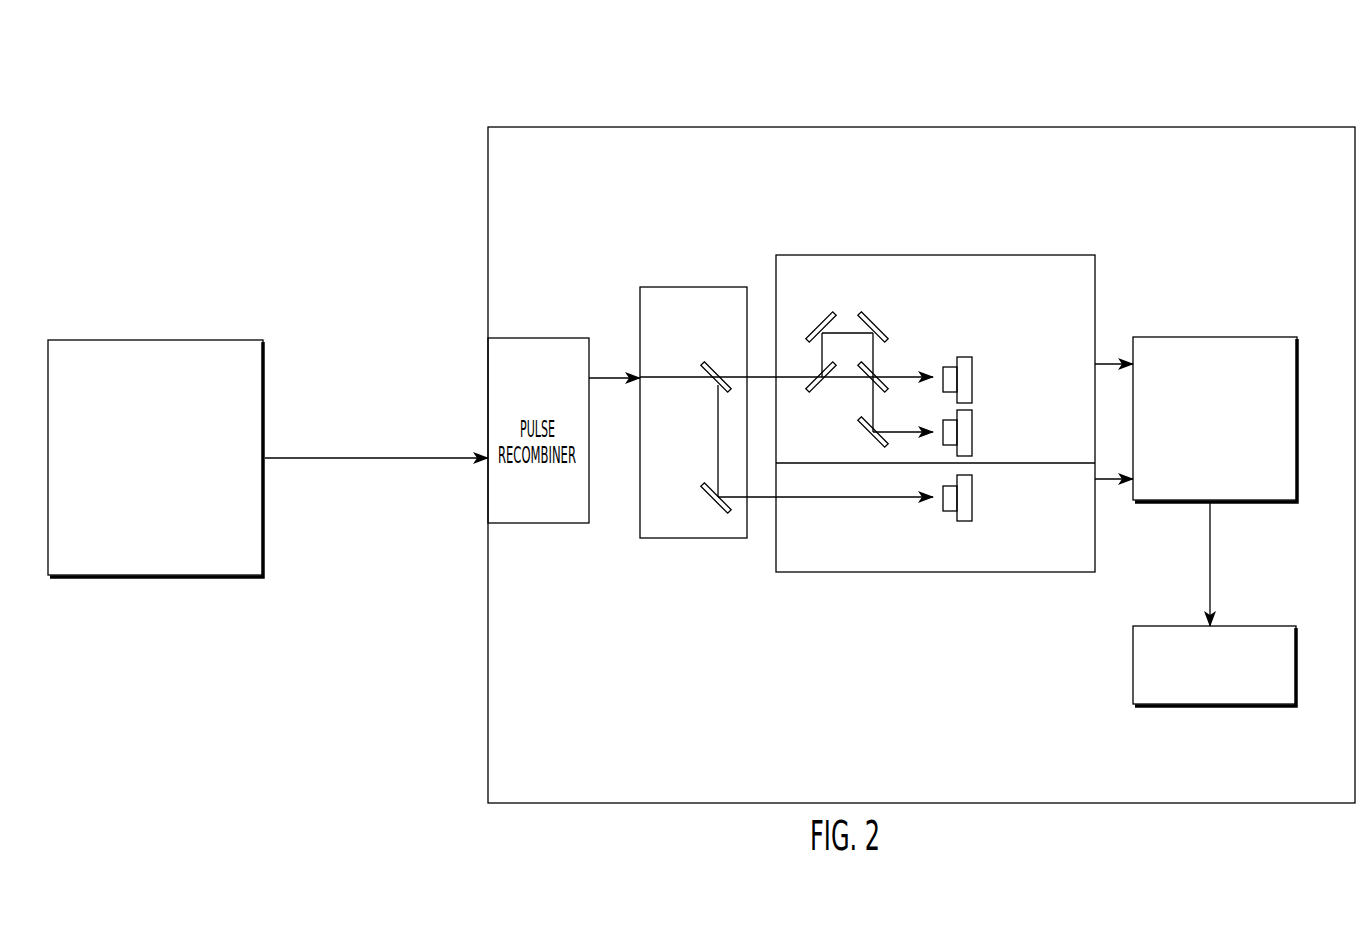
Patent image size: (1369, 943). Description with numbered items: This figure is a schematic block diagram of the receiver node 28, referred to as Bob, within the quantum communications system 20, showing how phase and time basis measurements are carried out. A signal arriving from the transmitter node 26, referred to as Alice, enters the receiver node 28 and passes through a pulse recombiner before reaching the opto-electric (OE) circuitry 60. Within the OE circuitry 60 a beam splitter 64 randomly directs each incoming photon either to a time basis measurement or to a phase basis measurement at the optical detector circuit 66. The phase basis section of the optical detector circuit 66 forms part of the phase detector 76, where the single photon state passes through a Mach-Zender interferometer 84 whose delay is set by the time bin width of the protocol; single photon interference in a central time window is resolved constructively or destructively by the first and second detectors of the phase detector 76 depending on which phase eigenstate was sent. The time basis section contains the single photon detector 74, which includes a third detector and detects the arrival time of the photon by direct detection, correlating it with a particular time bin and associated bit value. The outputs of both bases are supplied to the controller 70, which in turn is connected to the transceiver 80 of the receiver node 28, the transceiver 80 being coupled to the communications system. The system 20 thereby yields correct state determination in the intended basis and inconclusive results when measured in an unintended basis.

The quantum communications system 20 is at (742, 72).
The receiver node 28 is at (850, 127).
The transmitter node 26 is at (243, 340).
The opto-electric (OE) circuitry 60 is at (683, 287).
The beam splitter 64 is at (710, 510).
The optical detector circuit 66 is at (810, 575).
The Mach-Zender interferometer 84 is at (826, 318).
The phase detector 76 is at (1005, 343).
The single photon detector 74 is at (988, 525).
The controller 70 is at (1247, 337).
The transceiver 80 is at (1230, 626).